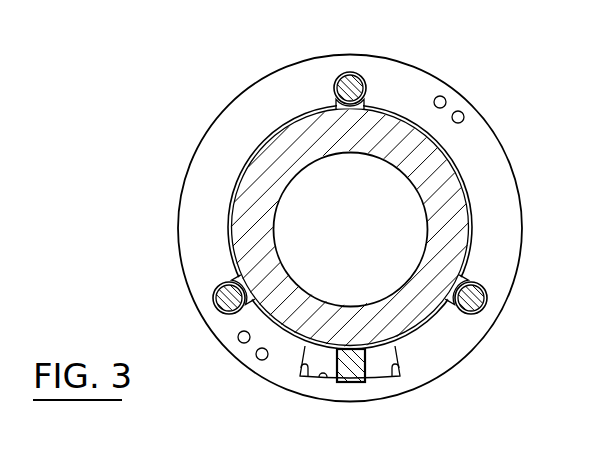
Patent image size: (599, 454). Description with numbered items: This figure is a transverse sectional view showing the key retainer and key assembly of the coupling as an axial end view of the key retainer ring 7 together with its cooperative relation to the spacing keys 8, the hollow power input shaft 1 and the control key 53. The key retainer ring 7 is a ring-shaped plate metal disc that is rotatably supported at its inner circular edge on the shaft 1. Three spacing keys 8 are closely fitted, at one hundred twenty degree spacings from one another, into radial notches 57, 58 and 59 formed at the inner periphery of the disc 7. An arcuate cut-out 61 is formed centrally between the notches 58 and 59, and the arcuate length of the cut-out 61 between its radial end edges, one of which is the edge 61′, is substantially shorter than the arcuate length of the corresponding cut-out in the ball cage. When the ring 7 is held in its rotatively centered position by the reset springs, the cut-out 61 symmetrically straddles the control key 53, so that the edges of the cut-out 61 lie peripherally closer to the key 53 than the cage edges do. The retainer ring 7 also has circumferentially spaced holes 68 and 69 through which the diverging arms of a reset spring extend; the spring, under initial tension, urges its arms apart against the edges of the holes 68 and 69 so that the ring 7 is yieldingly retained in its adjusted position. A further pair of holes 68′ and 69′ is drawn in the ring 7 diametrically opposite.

The hollow power input shaft 1 is at (277, 209).
The key retainer ring 7 is at (508, 153).
The spacing keys 8 is at (354, 80).
The control key 53 is at (352, 372).
The radial notch 57 is at (363, 103).
The radial notch 58 is at (232, 277).
The radial notch 59 is at (463, 279).
The arcuate cut-out 61 is at (355, 394).
The radial end edge 61′ is at (305, 377).
The hole 68 is at (240, 341).
The hole 69 is at (257, 359).
The bore 68′ is at (445, 97).
The bore 69′ is at (465, 116).